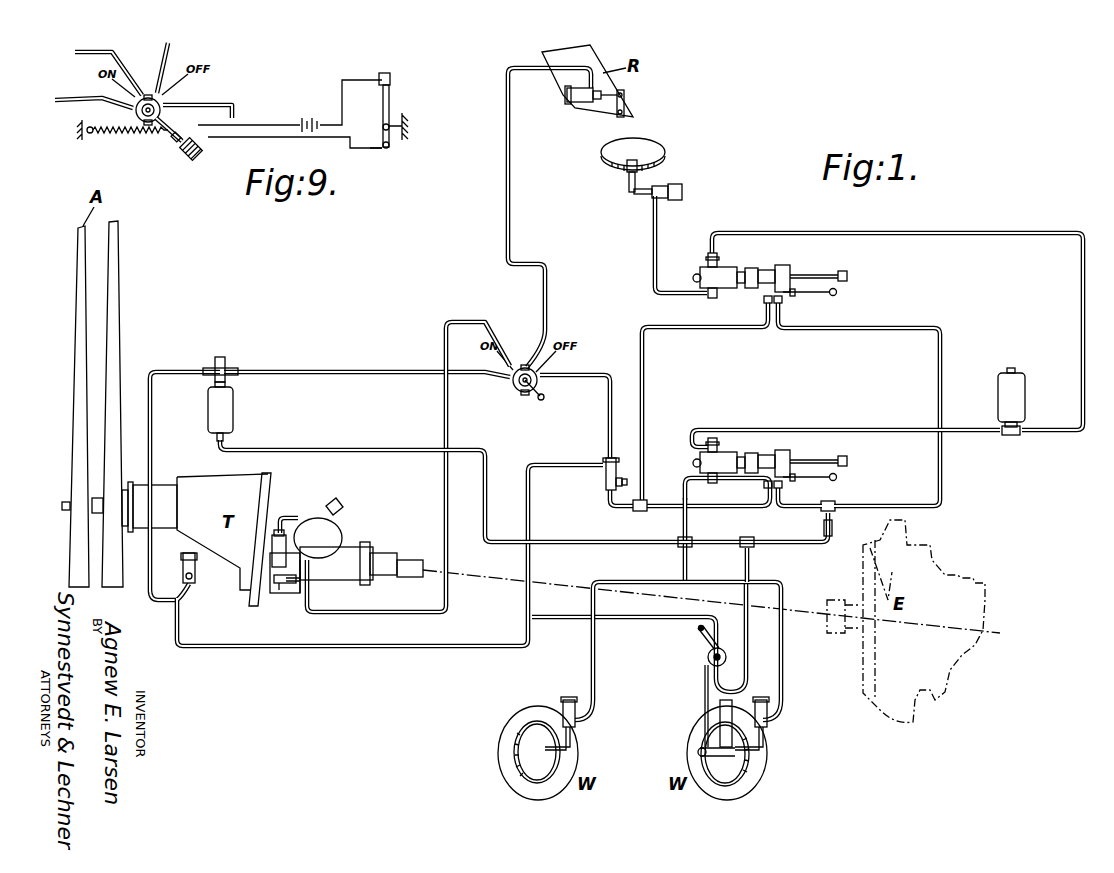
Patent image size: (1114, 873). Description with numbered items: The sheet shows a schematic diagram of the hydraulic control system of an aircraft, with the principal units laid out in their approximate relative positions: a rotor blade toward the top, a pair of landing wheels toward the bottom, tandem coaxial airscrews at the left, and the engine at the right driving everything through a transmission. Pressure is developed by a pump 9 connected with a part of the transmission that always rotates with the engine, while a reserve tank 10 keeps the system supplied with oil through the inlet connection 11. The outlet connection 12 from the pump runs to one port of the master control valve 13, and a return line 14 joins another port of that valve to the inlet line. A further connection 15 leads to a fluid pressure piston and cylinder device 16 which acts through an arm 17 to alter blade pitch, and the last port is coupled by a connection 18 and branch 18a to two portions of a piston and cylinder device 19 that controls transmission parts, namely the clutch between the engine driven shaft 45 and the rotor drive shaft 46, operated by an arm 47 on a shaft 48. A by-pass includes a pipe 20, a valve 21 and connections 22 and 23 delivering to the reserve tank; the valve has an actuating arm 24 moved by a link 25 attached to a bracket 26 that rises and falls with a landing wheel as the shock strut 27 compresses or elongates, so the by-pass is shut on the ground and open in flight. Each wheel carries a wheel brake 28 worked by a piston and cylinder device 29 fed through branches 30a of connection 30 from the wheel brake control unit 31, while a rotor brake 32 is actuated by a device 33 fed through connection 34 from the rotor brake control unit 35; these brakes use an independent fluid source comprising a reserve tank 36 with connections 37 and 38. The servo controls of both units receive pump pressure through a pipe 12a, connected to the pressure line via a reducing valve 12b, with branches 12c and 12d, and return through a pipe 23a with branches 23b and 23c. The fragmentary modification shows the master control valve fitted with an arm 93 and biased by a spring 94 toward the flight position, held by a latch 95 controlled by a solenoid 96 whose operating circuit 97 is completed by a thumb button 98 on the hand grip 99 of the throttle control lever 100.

In FIG. 1, the pump 9 is at (194, 577).
In FIG. 1, the reserve tank 10 is at (231, 408).
In FIG. 1, the inlet connection 11 is at (153, 427).
In FIG. 9, the outlet connection 12 is at (218, 102).
In FIG. 1, the outlet connection 12 is at (610, 430).
In FIG. 1, the pipe 12a is at (618, 507).
In FIG. 1, the reducing valve 12b is at (603, 482).
In FIG. 1, the branch 12c is at (660, 503).
In FIG. 1, the branch 12d is at (643, 433).
In FIG. 9, the master control valve 13 is at (130, 115).
In FIG. 1, the master control valve 13 is at (505, 385).
In FIG. 9, the return line 14 is at (67, 102).
In FIG. 1, the return line 14 is at (335, 368).
In FIG. 9, the connection 15 is at (169, 50).
In FIG. 1, the connection 15 is at (510, 223).
In FIG. 1, the fluid pressure piston and cylinder device 16 is at (577, 107).
In FIG. 1, the arm 17 is at (625, 98).
In FIG. 9, the connection 18 is at (77, 55).
In FIG. 1, the connection 18 is at (444, 419).
In FIG. 1, the branch 18a is at (298, 517).
In FIG. 1, the piston and cylinder device 19 is at (266, 556).
In FIG. 1, the pipe 20 is at (632, 618).
In FIG. 1, the valve 21 is at (708, 662).
In FIG. 1, the connection 22 is at (750, 640).
In FIG. 1, the connection 23 is at (295, 450).
In FIG. 1, the pipe 23a is at (828, 527).
In FIG. 1, the branch 23b is at (795, 508).
In FIG. 1, the branch 23c is at (940, 473).
In FIG. 1, the actuating arm 24 is at (700, 638).
In FIG. 1, the link 25 is at (703, 701).
In FIG. 1, the bracket 26 is at (706, 754).
In FIG. 1, the shock strut 27 is at (722, 720).
In FIG. 1, the wheel brake 28 is at (517, 763).
In FIG. 1, the piston and cylinder device 29 is at (563, 702).
In FIG. 1, the connection 30 is at (687, 523).
In FIG. 1, the branches 30a is at (590, 597).
In FIG. 1, the wheel brake control unit 31 is at (752, 470).
In FIG. 1, the rotor brake 32 is at (648, 141).
In FIG. 1, the device 33 is at (676, 184).
In FIG. 1, the connection 34 is at (657, 230).
In FIG. 1, the rotor brake control unit 35 is at (748, 294).
In FIG. 1, the reserve tank 36 is at (1018, 393).
In FIG. 1, the connection 37 is at (882, 428).
In FIG. 1, the connection 38 is at (990, 232).
In FIG. 1, the engine driven shaft 45 is at (410, 566).
In FIG. 1, the rotor drive shaft 46 is at (339, 508).
In FIG. 1, the arm 47 is at (287, 583).
In FIG. 1, the shaft 48 is at (308, 592).
In FIG. 9, the arm 93 is at (179, 130).
In FIG. 9, the spring 94 is at (126, 134).
In FIG. 9, the latch 95 is at (173, 141).
In FIG. 9, the solenoid 96 is at (193, 159).
In FIG. 9, the operating circuit 97 is at (275, 124).
In FIG. 9, the thumb button 98 is at (389, 74).
In FIG. 9, the hand grip 99 is at (390, 82).
In FIG. 9, the throttle control lever 100 is at (390, 110).